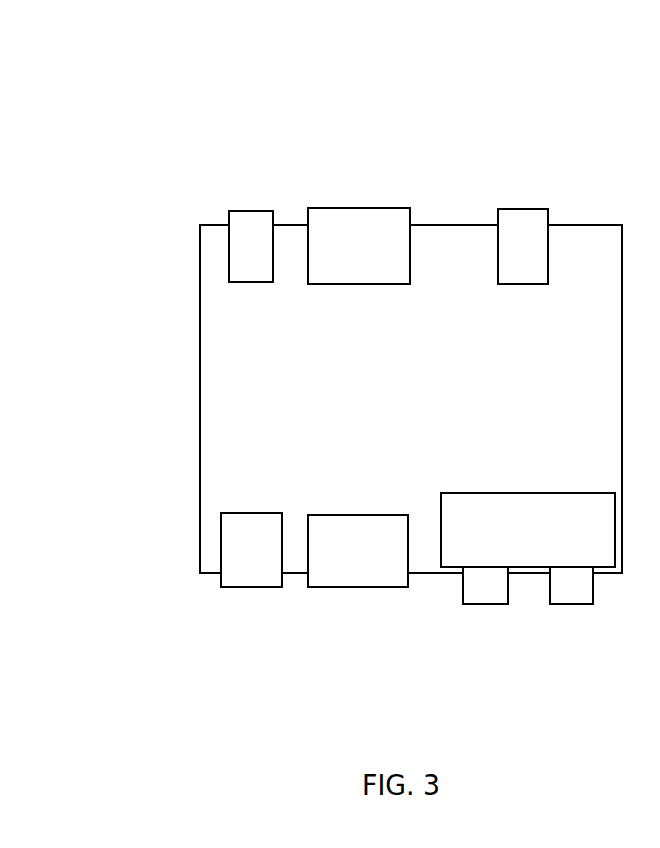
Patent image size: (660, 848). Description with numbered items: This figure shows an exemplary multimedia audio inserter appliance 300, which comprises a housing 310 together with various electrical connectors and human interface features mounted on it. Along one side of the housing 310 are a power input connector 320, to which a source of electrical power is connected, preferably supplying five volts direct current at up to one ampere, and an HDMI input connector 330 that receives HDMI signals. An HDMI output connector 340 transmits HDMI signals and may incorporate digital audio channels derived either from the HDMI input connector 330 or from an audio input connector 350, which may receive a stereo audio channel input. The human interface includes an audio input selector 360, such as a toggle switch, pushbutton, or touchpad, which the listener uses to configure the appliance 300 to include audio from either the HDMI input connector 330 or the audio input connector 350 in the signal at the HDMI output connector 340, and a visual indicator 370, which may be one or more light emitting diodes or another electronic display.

The multimedia audio inserter appliance 300 is at (128, 74).
The housing 310 is at (428, 420).
The power input connector 320 is at (241, 587).
The HDMI input connector 330 is at (354, 587).
The HDMI output connector 340 is at (308, 215).
The audio input connector 350 is at (593, 608).
The audio input selector 360 is at (498, 215).
The visual indicator 370 is at (229, 216).